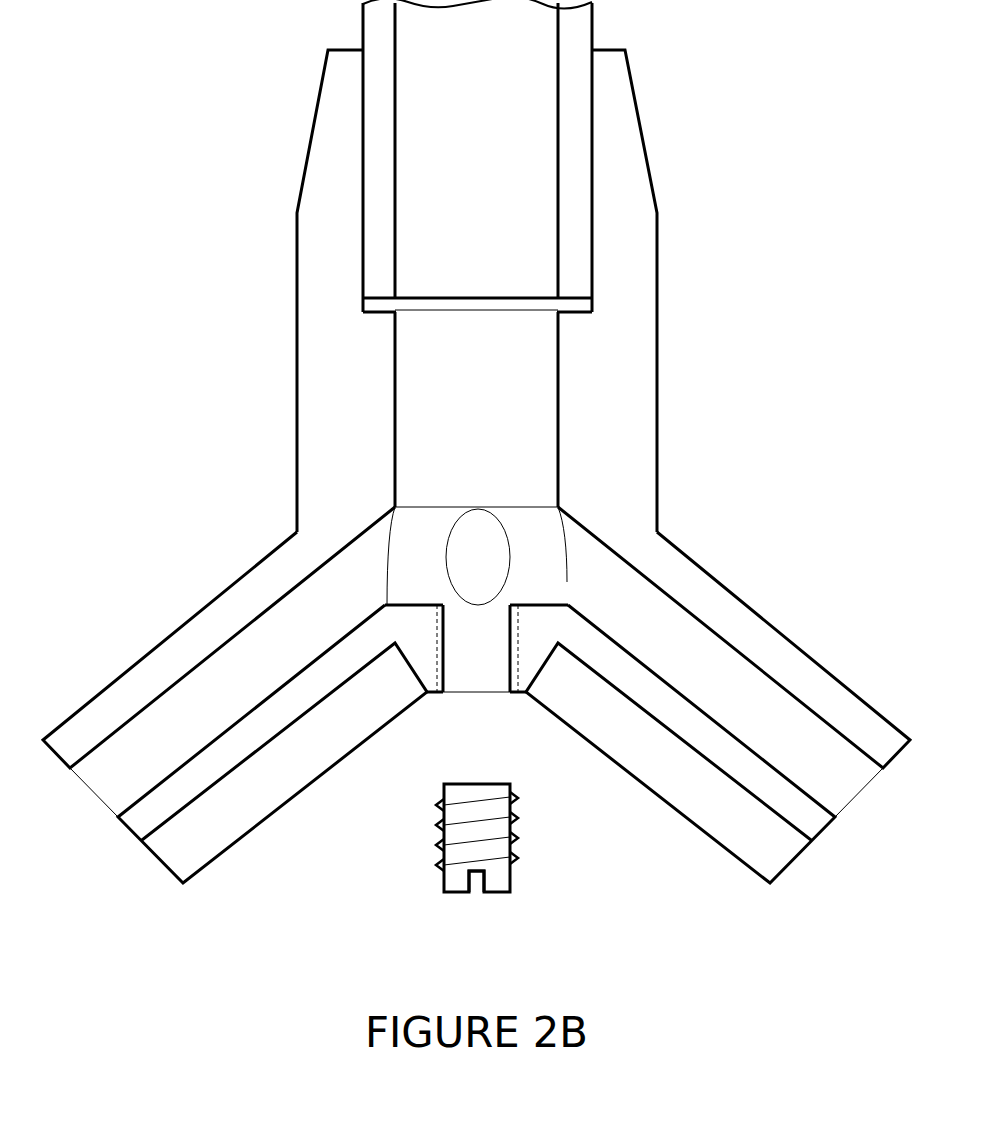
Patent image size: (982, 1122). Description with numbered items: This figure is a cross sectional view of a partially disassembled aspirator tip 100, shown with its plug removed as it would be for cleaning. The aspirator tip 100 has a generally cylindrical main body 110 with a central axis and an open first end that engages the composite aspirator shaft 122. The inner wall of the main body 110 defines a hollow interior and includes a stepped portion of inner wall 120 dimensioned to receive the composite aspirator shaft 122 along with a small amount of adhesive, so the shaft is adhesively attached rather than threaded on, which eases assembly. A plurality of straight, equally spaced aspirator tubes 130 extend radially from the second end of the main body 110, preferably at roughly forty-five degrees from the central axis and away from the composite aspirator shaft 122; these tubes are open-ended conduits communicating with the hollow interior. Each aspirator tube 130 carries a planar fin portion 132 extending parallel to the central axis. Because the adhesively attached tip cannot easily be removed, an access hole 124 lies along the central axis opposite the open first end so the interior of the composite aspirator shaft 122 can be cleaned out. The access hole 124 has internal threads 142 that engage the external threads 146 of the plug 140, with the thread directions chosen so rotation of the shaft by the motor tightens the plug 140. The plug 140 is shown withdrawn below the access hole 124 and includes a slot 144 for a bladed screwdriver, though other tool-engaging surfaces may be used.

The aspirator tip 100 is at (222, 268).
The main body 110 is at (658, 278).
The stepped portion of inner wall 120 is at (363, 278).
The composite aspirator shaft 122 is at (557, 117).
The access hole 124 is at (494, 655).
The aspirator tubes 130 is at (707, 570).
The planar fin portion 132 is at (617, 767).
The plug 140 is at (472, 783).
The internal threads 142 is at (520, 660).
The slot 144 is at (483, 892).
The external threads 146 is at (436, 827).